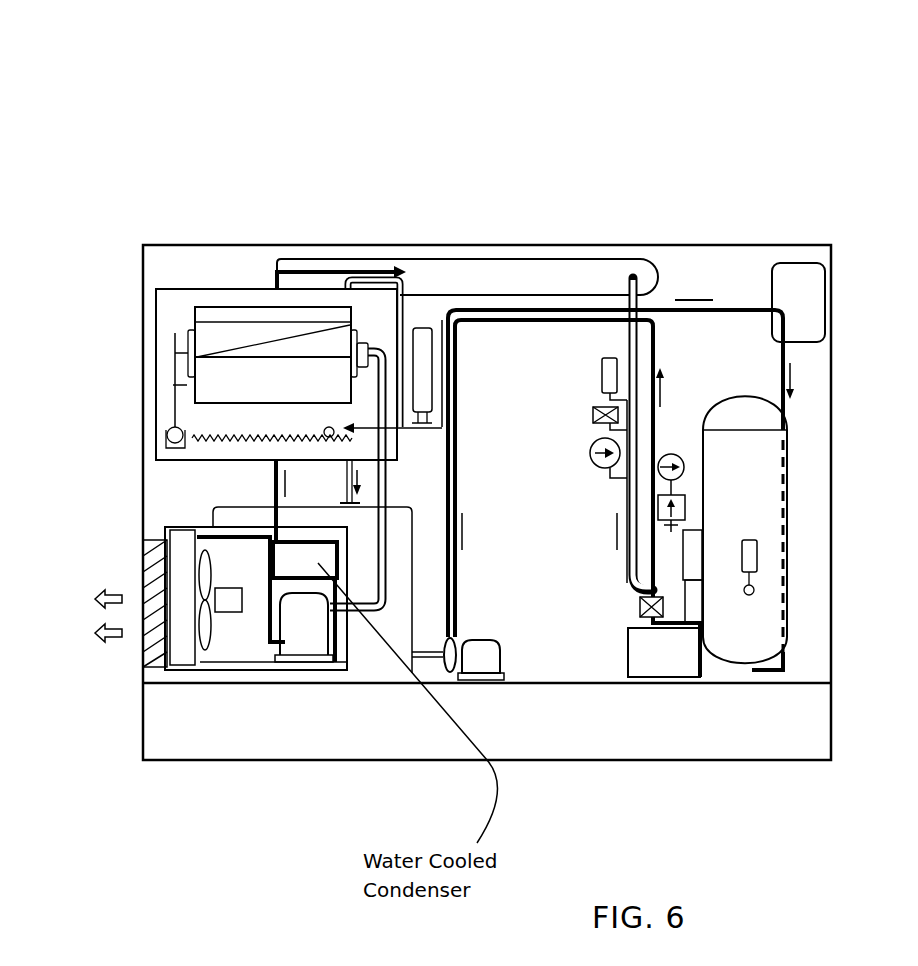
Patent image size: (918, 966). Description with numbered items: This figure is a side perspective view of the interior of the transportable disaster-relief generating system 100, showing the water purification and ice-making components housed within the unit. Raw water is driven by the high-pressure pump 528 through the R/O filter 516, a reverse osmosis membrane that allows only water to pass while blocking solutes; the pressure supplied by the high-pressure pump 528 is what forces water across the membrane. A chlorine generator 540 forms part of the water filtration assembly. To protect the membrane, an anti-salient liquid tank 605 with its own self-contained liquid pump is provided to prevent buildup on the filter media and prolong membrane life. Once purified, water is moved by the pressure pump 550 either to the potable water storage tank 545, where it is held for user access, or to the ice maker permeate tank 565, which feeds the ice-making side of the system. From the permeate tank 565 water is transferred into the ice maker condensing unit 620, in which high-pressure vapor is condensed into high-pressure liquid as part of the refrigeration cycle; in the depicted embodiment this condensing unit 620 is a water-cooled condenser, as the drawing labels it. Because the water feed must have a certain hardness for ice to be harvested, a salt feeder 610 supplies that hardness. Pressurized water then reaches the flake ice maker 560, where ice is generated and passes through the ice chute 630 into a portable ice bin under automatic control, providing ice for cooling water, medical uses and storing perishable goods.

The transportable disaster-relief generating system 100 is at (350, 95).
The R/O filter 516 is at (535, 292).
The high-pressure pump 528 is at (683, 567).
The chlorine generator 540 is at (663, 653).
The potable water storage tank 545 is at (768, 503).
The pressure pump 550 is at (480, 645).
The flake ice maker 560 is at (290, 390).
The ice maker permeate tank 565 is at (250, 515).
The anti-salient liquid tank 605 is at (797, 282).
The salt feeder 610 is at (425, 391).
The ice maker condensing unit 620 is at (233, 647).
The ice chute 630 is at (257, 324).